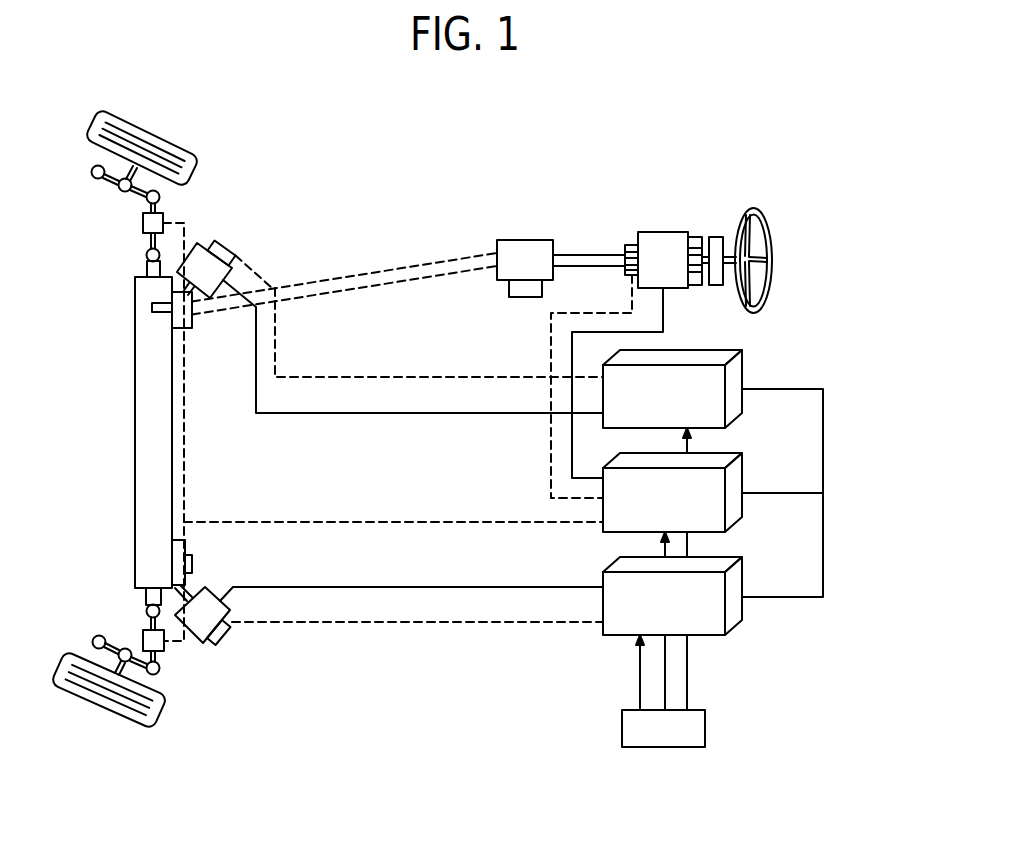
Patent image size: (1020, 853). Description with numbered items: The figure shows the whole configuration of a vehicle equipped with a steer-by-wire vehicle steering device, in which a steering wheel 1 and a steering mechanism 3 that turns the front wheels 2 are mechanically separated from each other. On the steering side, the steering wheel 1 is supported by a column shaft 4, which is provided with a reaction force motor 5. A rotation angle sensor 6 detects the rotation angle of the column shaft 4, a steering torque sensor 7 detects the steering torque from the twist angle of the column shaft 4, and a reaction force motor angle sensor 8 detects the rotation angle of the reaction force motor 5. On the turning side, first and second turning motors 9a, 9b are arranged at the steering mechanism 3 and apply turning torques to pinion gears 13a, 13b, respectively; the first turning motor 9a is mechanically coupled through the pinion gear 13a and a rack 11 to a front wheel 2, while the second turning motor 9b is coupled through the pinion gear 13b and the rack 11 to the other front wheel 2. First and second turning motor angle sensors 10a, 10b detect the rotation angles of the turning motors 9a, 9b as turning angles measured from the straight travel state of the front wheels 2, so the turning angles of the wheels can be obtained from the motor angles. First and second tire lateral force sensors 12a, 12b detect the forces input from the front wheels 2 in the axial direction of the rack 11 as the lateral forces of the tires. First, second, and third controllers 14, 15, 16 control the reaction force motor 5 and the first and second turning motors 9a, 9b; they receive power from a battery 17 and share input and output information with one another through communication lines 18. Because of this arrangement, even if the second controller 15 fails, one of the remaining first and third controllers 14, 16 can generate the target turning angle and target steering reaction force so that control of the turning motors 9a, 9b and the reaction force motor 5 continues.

The steering wheel 1 is at (755, 208).
The front wheels 2 is at (174, 140).
The steering mechanism 3 is at (132, 413).
The column shaft 4 is at (712, 236).
The reaction force motor 5 is at (663, 231).
The rotation angle sensor 6 is at (716, 286).
The steering torque sensor 7 is at (694, 286).
The reaction force motor angle sensor 8 is at (632, 244).
The first turning motor 9a is at (203, 644).
The second turning motor 9b is at (199, 244).
The first turning motor angle sensor 10a is at (230, 630).
The second turning motor angle sensor 10b is at (224, 243).
The rack 11 is at (146, 259).
The first tire lateral force sensor 12a is at (143, 638).
The second tire lateral force sensor 12b is at (143, 223).
The pinion gear 13a is at (163, 313).
The pinion gear 13b is at (192, 560).
The first controller 14 is at (743, 367).
The second controller 15 is at (743, 470).
The third controller 16 is at (743, 575).
The battery 17 is at (705, 728).
The communication lines 18 is at (824, 418).